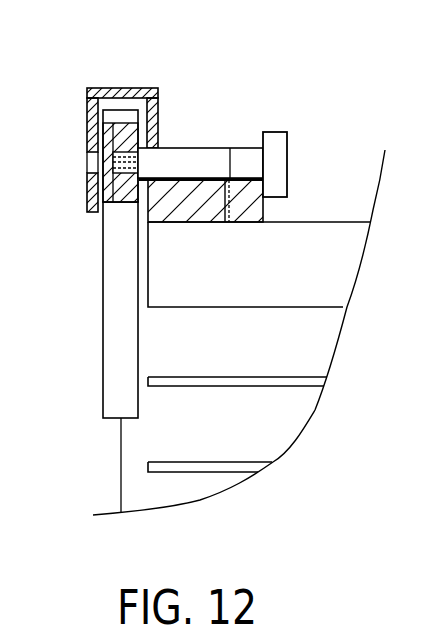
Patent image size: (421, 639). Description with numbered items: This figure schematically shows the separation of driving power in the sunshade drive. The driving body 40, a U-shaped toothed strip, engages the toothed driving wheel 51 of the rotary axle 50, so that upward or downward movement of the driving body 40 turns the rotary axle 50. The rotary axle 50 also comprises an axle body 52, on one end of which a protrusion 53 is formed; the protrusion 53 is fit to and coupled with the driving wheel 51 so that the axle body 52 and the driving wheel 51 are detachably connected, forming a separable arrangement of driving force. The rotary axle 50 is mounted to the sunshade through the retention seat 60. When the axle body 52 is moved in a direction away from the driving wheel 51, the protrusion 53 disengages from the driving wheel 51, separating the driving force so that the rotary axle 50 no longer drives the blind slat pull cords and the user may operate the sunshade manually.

The driving body 40 is at (110, 295).
The rotary axle 50 is at (204, 131).
The driving wheel 51 is at (115, 125).
The axle body 52 is at (282, 132).
The protrusion 53 is at (130, 170).
The retention seat 60 is at (92, 88).